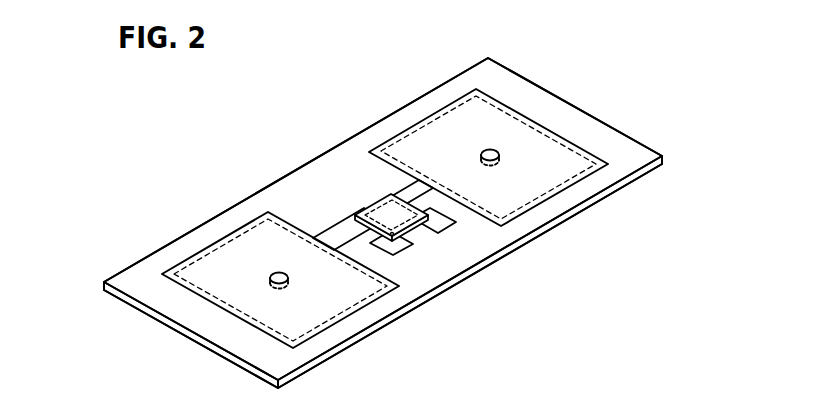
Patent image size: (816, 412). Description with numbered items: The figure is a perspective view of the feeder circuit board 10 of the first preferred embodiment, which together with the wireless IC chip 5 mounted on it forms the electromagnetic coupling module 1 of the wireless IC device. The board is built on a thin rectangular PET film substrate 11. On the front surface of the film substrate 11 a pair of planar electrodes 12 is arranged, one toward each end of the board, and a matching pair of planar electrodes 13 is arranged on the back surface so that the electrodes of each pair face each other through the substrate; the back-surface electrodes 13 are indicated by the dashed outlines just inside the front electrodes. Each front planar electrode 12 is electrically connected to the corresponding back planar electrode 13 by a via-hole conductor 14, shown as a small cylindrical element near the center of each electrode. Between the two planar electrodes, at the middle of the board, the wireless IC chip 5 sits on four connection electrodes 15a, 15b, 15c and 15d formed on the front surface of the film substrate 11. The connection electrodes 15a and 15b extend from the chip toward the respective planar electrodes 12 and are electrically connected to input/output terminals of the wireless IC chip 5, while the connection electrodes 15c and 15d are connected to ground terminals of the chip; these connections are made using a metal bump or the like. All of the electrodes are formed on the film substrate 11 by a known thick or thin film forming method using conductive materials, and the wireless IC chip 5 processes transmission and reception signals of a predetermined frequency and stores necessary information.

The electromagnetic coupling module 1 is at (388, 110).
The wireless IC chip 5 is at (352, 215).
The feeder circuit board 10 is at (252, 196).
The PET film substrate 11 is at (594, 124).
The planar electrodes 12 is at (492, 112).
The planar electrodes 13 is at (562, 198).
The via-hole conductors 14 is at (496, 150).
The connection electrode 15a is at (337, 225).
The connection electrode 15b is at (388, 195).
The connection electrode 15c is at (410, 246).
The connection electrode 15d is at (438, 233).